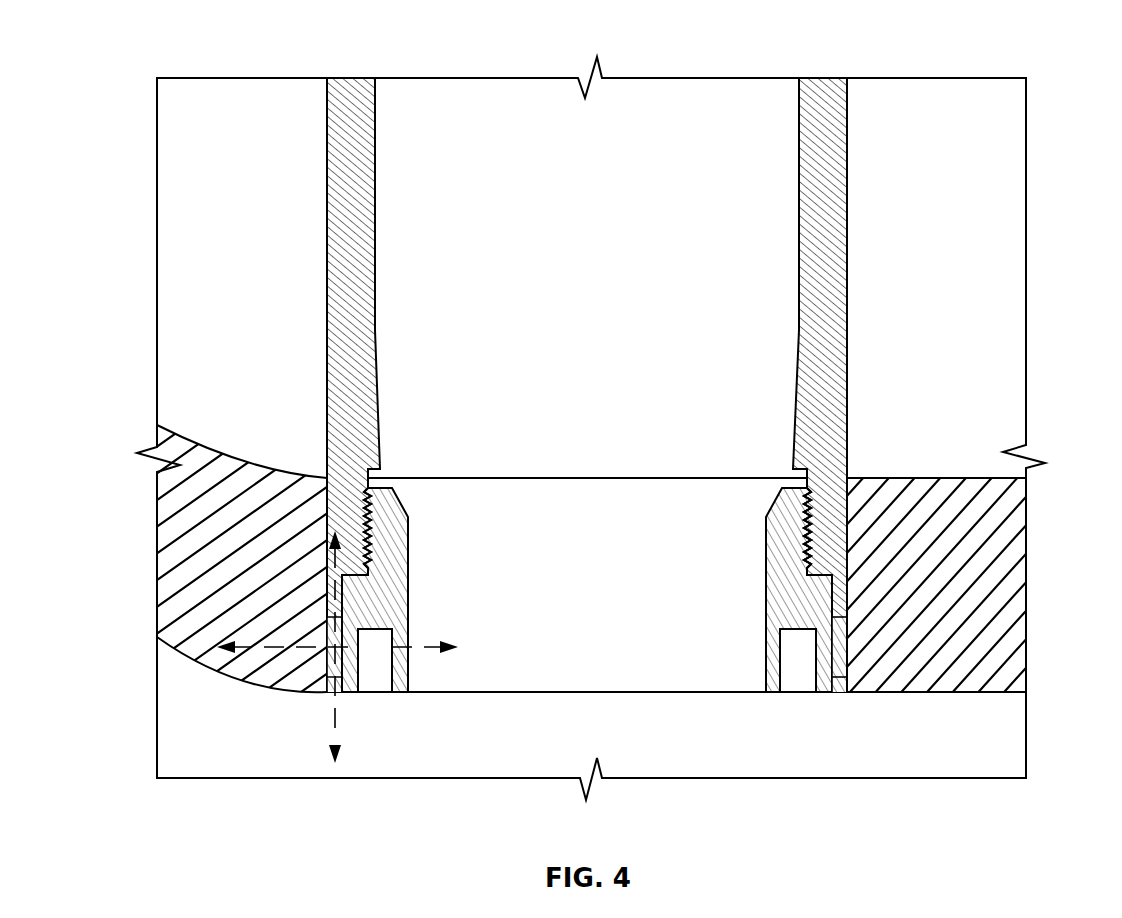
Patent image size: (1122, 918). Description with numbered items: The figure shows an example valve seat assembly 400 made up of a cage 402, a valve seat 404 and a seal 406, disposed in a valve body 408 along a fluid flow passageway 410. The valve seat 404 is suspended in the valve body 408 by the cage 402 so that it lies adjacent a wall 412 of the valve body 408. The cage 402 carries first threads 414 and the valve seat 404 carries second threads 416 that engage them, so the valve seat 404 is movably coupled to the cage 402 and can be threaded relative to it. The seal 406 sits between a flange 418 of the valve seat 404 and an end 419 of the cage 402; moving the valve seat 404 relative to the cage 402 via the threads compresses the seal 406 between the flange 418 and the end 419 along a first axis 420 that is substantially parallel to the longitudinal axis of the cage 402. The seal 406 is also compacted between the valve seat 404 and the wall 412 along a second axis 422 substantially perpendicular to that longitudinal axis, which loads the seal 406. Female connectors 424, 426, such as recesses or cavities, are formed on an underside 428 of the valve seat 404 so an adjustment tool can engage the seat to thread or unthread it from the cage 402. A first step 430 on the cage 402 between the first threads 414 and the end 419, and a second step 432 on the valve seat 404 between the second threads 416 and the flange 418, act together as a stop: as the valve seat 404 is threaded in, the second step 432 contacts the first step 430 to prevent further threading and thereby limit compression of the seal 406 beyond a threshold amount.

The valve seat assembly 400 is at (878, 421).
The cage 402 is at (848, 110).
The valve seat 404 is at (393, 543).
The seal 406 is at (850, 655).
The valve body 408 is at (997, 193).
The fluid flow passageway 410 is at (557, 752).
The wall 412 is at (848, 648).
The first threads 414 is at (803, 542).
The second threads 416 is at (810, 512).
The flange 418 is at (829, 684).
The end 419 is at (836, 617).
The first axis 420 is at (335, 726).
The second axis 422 is at (423, 648).
The female connector 424 is at (376, 676).
The female connector 426 is at (799, 676).
The underside 428 is at (637, 692).
The first step 430 is at (818, 562).
The second step 432 is at (814, 572).